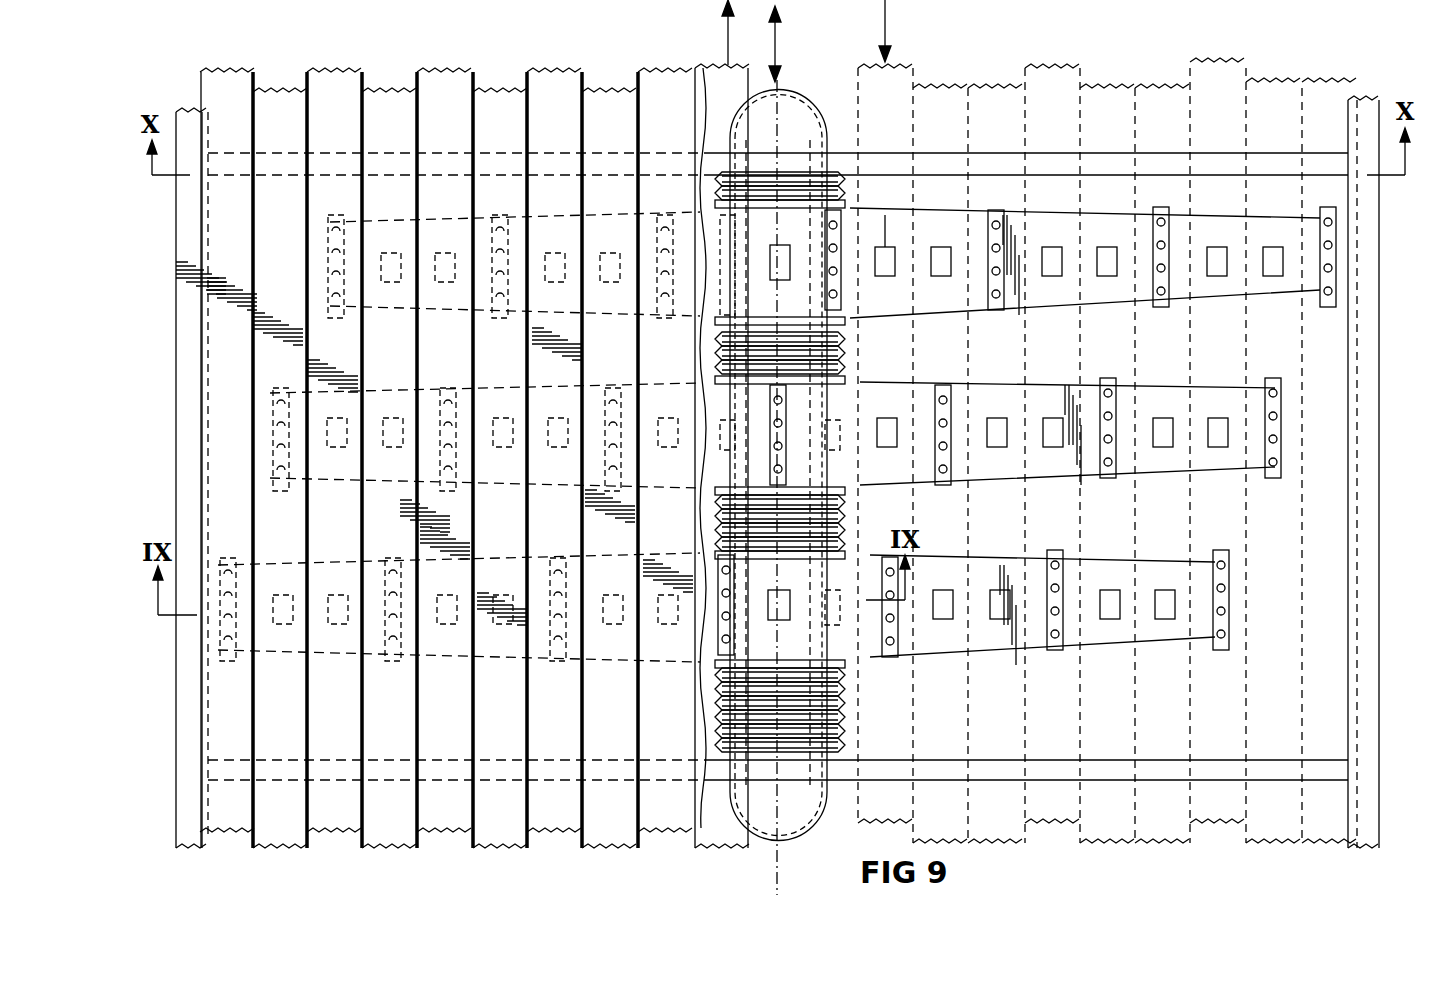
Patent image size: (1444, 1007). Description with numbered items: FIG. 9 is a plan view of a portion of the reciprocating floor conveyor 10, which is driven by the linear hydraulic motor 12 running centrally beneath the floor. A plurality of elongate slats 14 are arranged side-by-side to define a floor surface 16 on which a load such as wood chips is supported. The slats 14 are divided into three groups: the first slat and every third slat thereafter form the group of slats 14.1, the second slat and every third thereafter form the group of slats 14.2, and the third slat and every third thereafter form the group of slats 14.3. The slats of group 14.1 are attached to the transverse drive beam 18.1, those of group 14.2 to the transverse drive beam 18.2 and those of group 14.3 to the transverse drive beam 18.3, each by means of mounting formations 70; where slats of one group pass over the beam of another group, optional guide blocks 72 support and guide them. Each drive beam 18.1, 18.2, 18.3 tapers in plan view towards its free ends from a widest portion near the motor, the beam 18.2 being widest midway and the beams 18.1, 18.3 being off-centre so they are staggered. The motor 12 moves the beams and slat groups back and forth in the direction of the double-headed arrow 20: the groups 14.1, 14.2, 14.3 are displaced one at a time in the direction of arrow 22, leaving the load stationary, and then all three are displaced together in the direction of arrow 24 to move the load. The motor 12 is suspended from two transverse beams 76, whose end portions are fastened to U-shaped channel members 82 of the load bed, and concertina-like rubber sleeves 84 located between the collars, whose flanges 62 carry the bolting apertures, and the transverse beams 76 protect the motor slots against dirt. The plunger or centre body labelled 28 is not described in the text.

The reciprocating floor conveyor 10 is at (1312, 76).
The linear hydraulic motor 12 is at (685, 694).
The slat 14 is at (1150, 115).
The first group of slats 14.1 is at (230, 115).
The second group of slats 14.2 is at (285, 805).
The third group of slats 14.3 is at (333, 132).
The floor surface 16 is at (778, 445).
The transverse drive beam 18.1 is at (1112, 632).
The transverse drive beam 18.2 is at (1172, 457).
The transverse drive beam 18.3 is at (1225, 288).
The double-headed arrow 20 is at (784, 50).
The arrow 22 is at (724, 42).
The arrow 24 is at (888, 22).
The plunger 28 is at (782, 112).
The semi-circular flattened flange 62 is at (712, 197).
The mounting formation 70 is at (397, 660).
The guide block 72 is at (398, 420).
The transverse beam 76 is at (992, 160).
The U-shaped channel member 82 is at (192, 408).
The concertina-like rubber sleeve 84 is at (838, 178).